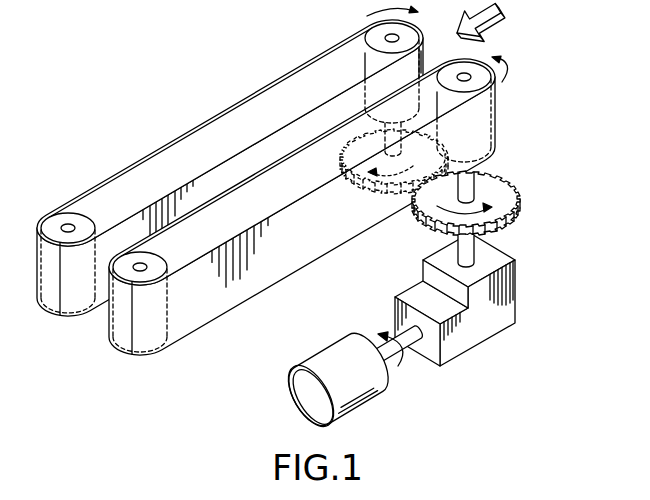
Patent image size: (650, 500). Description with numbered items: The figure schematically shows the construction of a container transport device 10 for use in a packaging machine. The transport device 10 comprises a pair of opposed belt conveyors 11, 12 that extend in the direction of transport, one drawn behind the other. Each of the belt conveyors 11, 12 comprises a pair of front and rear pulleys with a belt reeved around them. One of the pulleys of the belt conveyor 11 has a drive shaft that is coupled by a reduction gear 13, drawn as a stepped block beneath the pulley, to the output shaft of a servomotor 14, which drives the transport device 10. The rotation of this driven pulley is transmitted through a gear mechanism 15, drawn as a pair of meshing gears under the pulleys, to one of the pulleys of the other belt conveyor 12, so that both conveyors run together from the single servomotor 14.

The transport device 10 is at (272, 180).
The belt conveyor 11 is at (301, 141).
The belt conveyor 12 is at (226, 106).
The reduction gear 13 is at (507, 313).
The servomotor 14 is at (380, 398).
The gear mechanism 15 is at (528, 211).